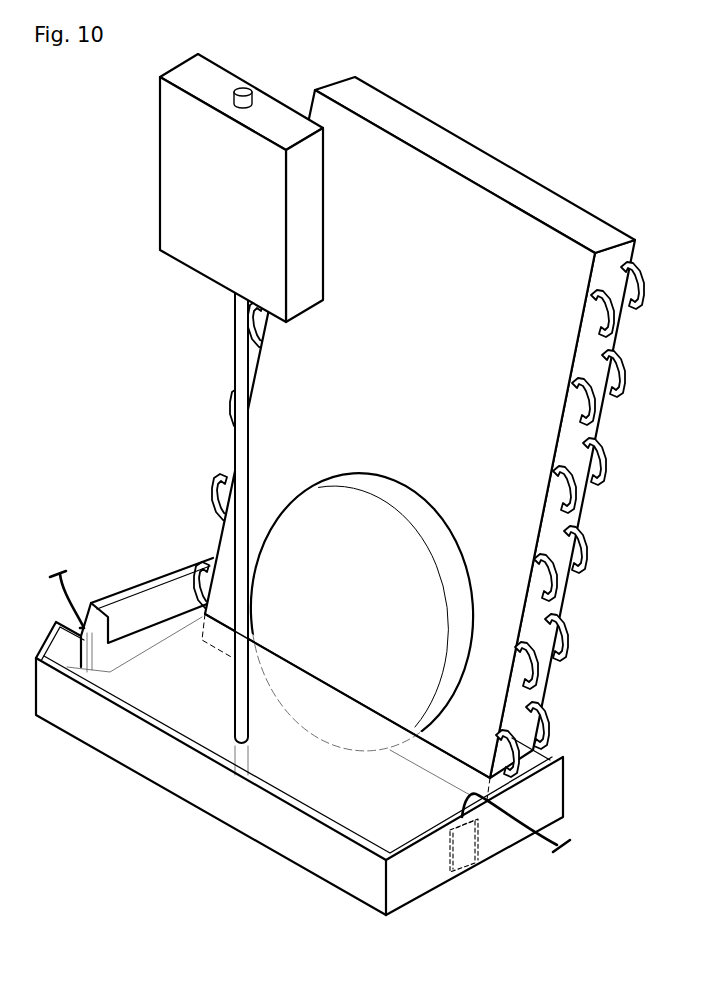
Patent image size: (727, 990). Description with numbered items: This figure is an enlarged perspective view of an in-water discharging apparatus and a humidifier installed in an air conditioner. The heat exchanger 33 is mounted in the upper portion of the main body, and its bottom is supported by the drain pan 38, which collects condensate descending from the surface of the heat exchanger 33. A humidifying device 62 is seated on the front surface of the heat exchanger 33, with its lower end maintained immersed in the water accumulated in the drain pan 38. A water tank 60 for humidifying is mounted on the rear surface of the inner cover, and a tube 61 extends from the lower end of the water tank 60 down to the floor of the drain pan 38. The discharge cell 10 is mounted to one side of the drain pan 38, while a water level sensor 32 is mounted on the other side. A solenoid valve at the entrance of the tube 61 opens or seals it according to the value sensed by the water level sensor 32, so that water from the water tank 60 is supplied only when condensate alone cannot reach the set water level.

The discharge cell 10 is at (90, 630).
The water level sensor 32 is at (477, 843).
The heat exchanger 33 is at (522, 192).
The drain pan 38 is at (108, 732).
The water tank 60 is at (176, 155).
The tube 61 is at (243, 414).
The humidifying device 62 is at (377, 517).